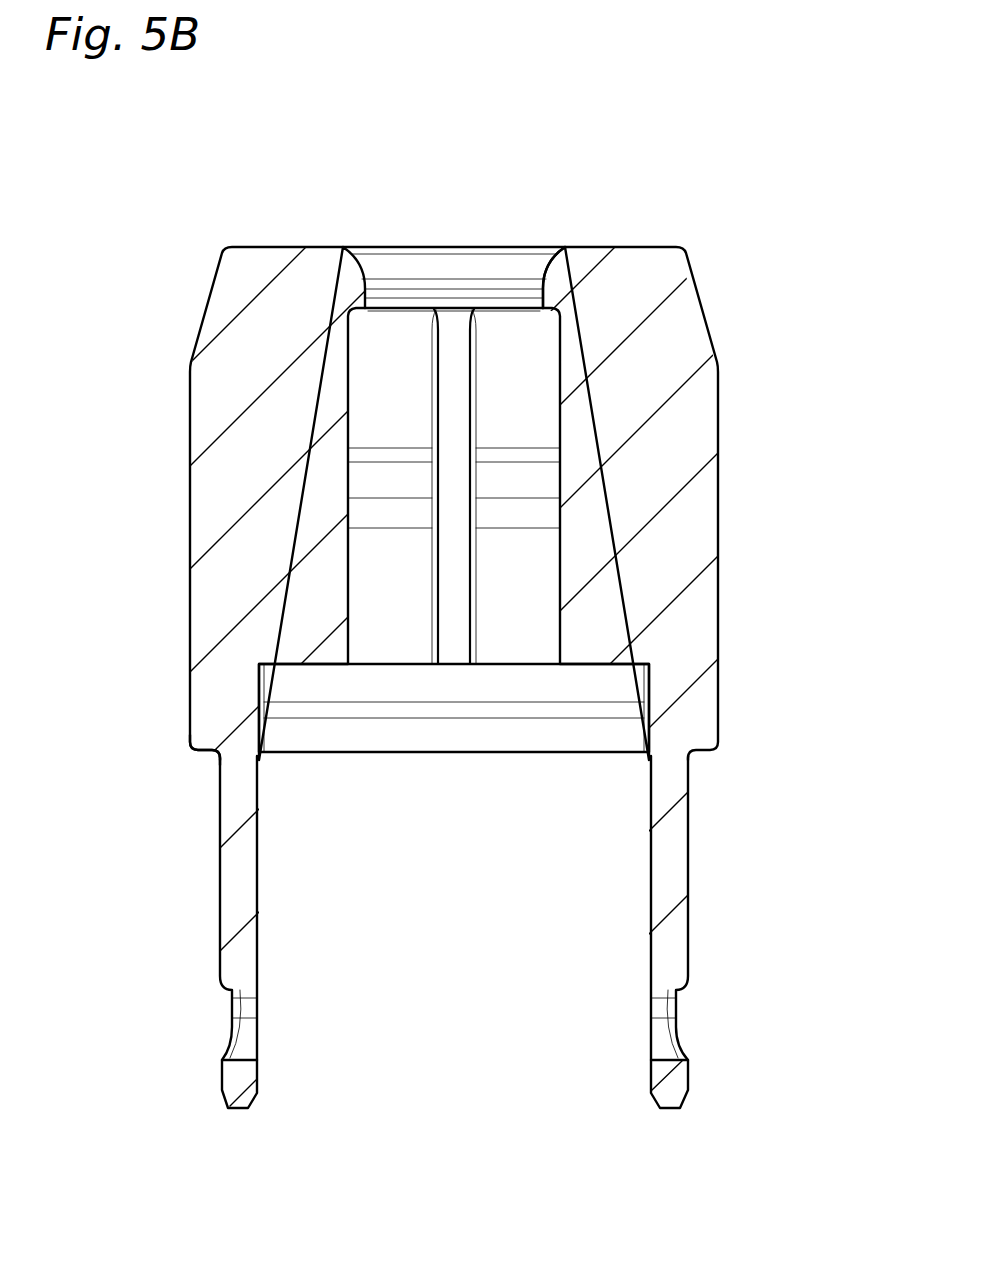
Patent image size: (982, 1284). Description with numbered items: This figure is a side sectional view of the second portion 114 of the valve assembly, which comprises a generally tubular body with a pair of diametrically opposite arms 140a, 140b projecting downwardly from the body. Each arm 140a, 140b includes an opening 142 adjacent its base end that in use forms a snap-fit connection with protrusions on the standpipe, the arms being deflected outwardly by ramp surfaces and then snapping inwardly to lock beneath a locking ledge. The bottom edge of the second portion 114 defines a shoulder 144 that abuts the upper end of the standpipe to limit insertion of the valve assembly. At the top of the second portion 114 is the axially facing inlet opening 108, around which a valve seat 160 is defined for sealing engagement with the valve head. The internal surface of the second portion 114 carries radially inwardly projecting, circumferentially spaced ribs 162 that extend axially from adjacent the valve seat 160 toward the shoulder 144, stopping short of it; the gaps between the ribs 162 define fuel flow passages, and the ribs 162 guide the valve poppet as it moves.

The inlet opening 108 is at (427, 265).
The second portion 114 is at (168, 406).
The arm 140a is at (220, 893).
The arm 140b is at (690, 873).
The opening 142 is at (250, 1032).
The shoulder 144 is at (209, 754).
The valve seat 160 is at (548, 306).
The ribs 162 is at (322, 664).